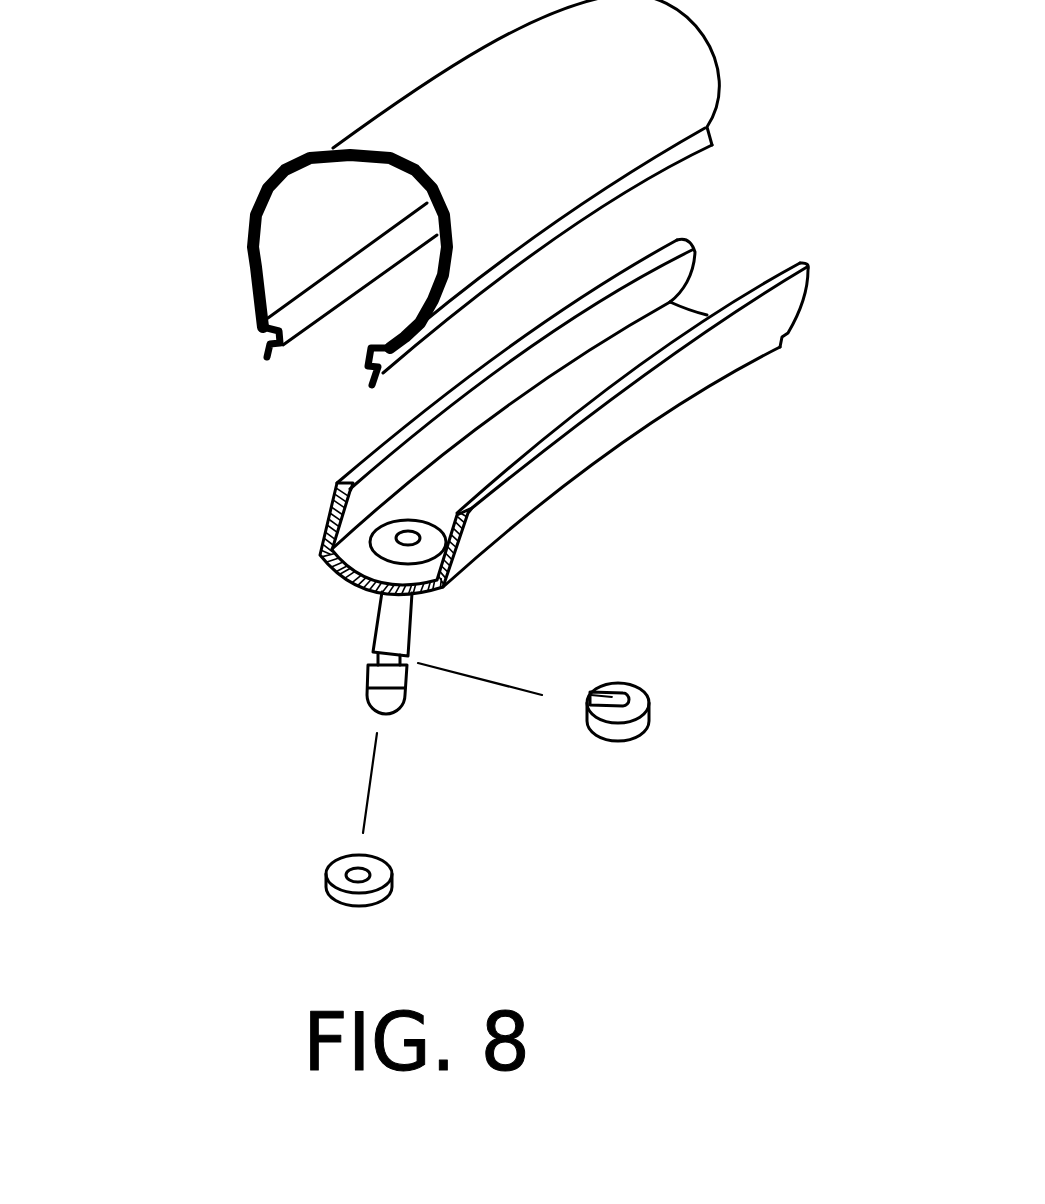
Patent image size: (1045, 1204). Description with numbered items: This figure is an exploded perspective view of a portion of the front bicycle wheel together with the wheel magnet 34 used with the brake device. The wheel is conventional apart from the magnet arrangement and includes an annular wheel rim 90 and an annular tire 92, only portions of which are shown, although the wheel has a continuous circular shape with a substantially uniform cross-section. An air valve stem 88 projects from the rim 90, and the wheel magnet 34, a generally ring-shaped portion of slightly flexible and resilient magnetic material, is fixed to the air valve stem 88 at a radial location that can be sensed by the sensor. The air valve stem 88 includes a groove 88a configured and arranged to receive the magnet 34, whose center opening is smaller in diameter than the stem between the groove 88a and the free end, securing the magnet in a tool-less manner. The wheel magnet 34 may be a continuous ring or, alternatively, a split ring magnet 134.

The annular tire 92 is at (248, 295).
The annular wheel rim 90 is at (328, 518).
The air valve stem 88 is at (375, 627).
The groove 88a is at (368, 663).
The split ring magnet 134 is at (649, 731).
The wheel magnet 34 is at (393, 900).